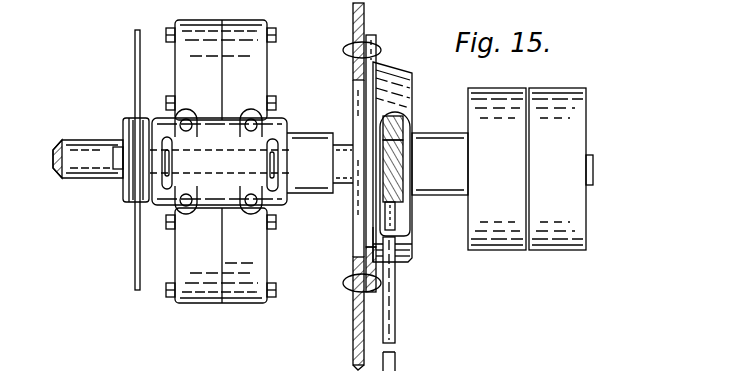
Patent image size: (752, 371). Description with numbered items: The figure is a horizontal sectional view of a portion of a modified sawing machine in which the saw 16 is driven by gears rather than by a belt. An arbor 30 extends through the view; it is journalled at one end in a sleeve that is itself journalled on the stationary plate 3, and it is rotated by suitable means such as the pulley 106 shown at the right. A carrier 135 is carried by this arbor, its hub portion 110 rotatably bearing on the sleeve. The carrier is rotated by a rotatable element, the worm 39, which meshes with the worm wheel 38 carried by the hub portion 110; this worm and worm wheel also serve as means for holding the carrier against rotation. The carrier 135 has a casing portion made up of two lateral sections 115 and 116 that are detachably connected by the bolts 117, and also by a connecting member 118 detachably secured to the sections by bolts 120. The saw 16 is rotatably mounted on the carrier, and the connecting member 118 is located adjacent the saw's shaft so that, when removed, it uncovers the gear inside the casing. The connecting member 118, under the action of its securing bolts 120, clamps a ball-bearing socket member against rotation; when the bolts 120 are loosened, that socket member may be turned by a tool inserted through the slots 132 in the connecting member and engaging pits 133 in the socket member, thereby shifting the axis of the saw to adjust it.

The plate 3 is at (352, 306).
The saw 16 is at (127, 266).
The arbor 30 is at (87, 140).
The pulley 106 is at (494, 250).
The hub portion 110 is at (348, 186).
The lateral section 115 is at (222, 74).
The lateral section 116 is at (222, 96).
The bolts 117 is at (229, 172).
The connecting member 118 is at (251, 163).
The bolts 120 is at (188, 116).
The slots 132 is at (172, 172).
The pits 133 is at (172, 164).
The carrier 135 is at (247, 312).
The worm wheel 38 is at (402, 126).
The worm 39 is at (403, 164).